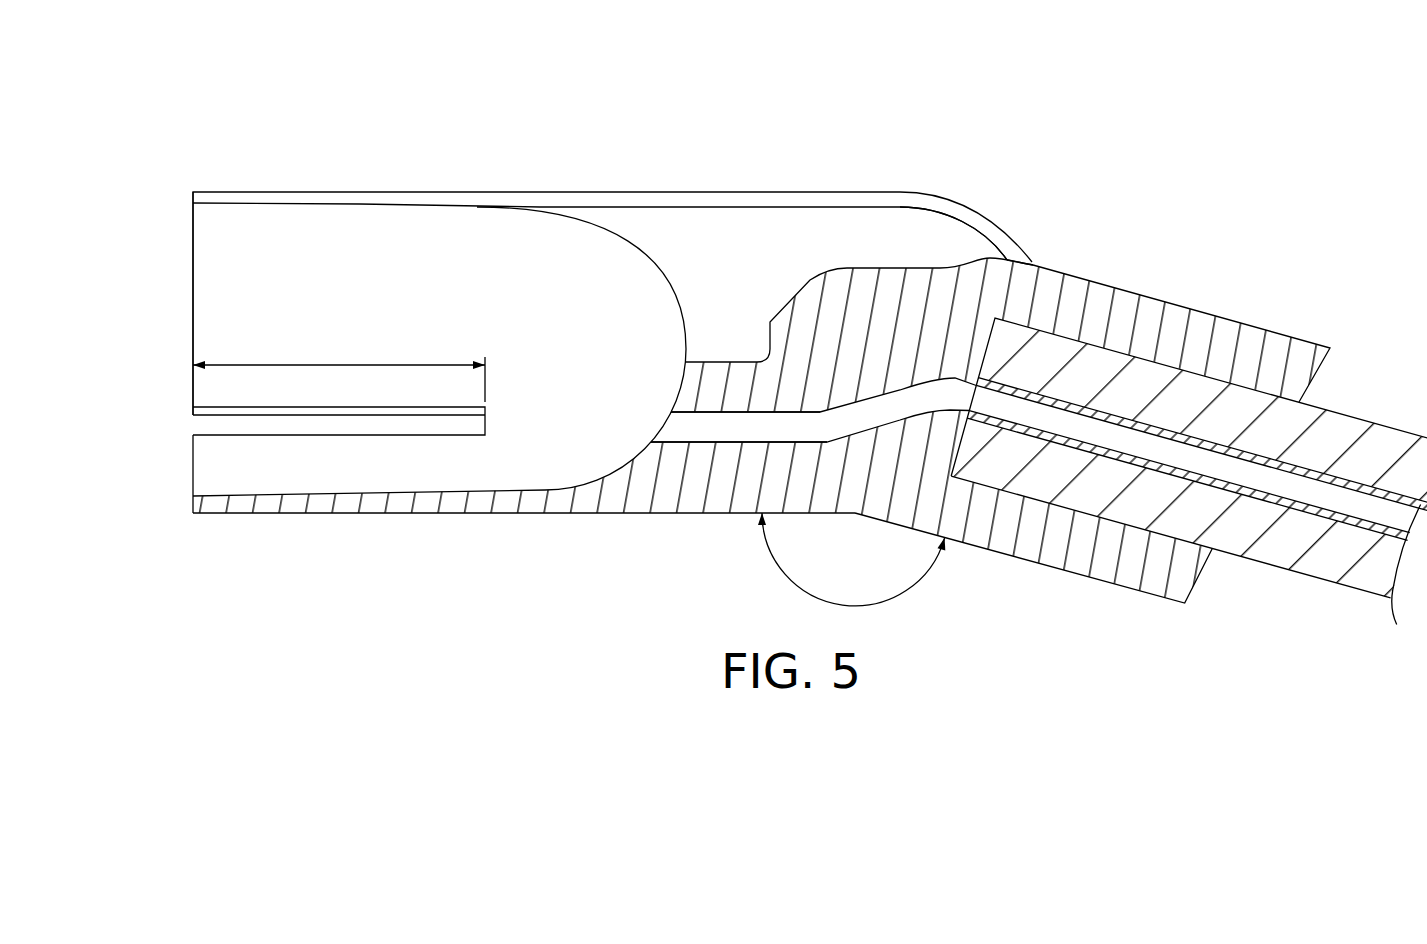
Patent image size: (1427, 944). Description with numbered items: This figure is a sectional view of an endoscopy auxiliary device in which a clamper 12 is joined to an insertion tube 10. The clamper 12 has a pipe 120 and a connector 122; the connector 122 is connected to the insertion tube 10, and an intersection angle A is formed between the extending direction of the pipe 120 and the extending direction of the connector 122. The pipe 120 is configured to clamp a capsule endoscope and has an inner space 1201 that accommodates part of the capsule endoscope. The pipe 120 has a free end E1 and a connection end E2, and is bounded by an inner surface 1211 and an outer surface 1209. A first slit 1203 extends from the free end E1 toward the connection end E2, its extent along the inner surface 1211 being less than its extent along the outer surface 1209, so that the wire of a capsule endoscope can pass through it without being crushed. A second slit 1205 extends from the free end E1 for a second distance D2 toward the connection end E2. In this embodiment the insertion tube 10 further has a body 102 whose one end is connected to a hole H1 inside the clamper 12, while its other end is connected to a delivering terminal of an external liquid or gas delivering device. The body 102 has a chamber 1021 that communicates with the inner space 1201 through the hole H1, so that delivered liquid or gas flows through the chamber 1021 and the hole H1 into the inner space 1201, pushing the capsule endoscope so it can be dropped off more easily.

The clamper 12 is at (761, 317).
The pipe 120 is at (760, 182).
The connector 122 is at (1154, 279).
The outer surface 1209 is at (348, 187).
The inner space 1201 is at (324, 322).
The first slit 1203 is at (895, 241).
The second slit 1205 is at (227, 425).
The inner surface 1211 is at (314, 492).
The insertion tube 10 is at (1186, 507).
The body 102 is at (1360, 517).
The chamber 1021 is at (1313, 487).
The free end E1 is at (180, 238).
The connection end E2 is at (1045, 263).
The second distance D2 is at (339, 369).
The hole H1 is at (708, 428).
The intersection angle A is at (851, 559).